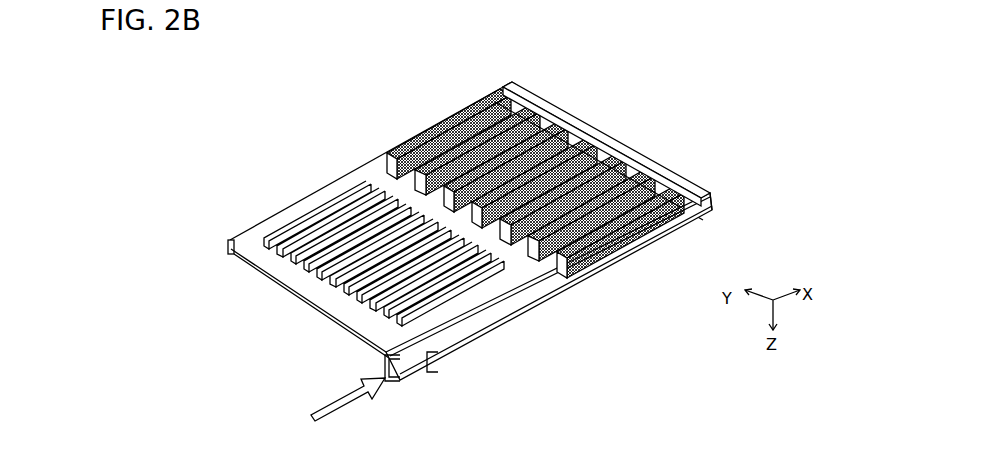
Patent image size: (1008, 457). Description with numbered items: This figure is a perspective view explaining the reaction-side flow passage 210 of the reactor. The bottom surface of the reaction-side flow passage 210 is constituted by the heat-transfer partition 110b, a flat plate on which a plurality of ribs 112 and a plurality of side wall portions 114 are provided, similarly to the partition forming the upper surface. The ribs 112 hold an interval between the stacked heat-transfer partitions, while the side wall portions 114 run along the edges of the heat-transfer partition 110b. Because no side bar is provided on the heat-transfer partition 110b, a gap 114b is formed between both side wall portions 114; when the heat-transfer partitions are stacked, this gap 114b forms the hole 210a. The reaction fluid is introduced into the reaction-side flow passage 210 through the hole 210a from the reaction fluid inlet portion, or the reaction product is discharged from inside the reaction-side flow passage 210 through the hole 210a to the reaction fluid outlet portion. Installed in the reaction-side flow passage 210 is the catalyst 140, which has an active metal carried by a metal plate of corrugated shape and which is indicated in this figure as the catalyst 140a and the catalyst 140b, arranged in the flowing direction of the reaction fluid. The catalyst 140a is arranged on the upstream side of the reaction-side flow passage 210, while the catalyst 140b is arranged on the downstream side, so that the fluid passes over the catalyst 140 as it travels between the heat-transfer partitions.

The reaction-side flow passage 210 is at (305, 93).
The hole 210a is at (445, 193).
The heat-transfer partition 110b is at (318, 297).
The ribs 112 is at (640, 165).
The side wall portions 114 is at (504, 90).
The gap 114b is at (535, 112).
The catalyst 140 is at (462, 259).
The catalyst 140a is at (280, 203).
The catalyst 140b is at (435, 117).